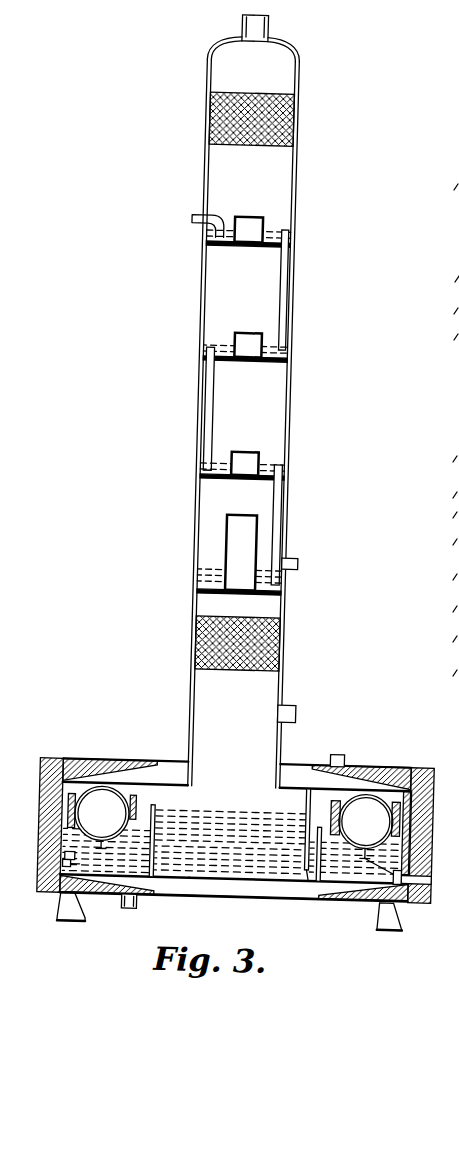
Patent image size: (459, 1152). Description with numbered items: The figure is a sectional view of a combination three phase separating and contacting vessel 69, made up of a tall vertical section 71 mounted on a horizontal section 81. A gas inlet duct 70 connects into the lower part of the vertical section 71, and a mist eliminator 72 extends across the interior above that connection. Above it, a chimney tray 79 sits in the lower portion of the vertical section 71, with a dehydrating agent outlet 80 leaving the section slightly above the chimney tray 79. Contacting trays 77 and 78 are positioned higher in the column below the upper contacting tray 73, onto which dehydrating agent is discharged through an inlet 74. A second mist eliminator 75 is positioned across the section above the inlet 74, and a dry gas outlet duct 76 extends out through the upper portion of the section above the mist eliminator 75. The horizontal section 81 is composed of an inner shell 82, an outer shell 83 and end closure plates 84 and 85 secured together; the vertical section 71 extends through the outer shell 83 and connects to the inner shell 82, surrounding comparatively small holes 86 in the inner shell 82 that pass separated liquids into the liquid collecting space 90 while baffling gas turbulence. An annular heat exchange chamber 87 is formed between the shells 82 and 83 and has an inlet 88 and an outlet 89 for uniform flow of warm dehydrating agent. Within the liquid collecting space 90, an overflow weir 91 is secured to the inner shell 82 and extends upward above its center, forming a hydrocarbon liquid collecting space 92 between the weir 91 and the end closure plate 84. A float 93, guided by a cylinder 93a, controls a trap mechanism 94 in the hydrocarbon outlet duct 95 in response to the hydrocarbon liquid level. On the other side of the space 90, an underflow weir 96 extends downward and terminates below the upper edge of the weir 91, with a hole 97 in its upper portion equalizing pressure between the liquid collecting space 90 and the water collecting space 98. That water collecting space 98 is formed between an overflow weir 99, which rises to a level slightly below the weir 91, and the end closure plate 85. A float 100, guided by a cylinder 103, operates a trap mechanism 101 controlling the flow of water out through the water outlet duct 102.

The combination three phase separating and contacting vessel 69 is at (178, 415).
The gas inlet duct 70 is at (298, 704).
The vertical section 71 is at (195, 313).
The mist eliminator 72 is at (289, 639).
The upper contacting tray 73 is at (204, 248).
The inlet 74 is at (190, 216).
The mist eliminator 75 is at (288, 117).
The dry gas outlet duct 76 is at (231, 22).
The contacting tray 77 is at (280, 362).
The contacting tray 78 is at (208, 483).
The chimney tray 79 is at (203, 598).
The dehydrating agent outlet 80 is at (296, 574).
The horizontal section 81 is at (143, 768).
The inner shell 82 is at (246, 890).
The outer shell 83 is at (168, 772).
The end closure plate 84 is at (58, 763).
The end closure plate 85 is at (433, 763).
The holes 86 is at (268, 784).
The annular heat exchange chamber 87 is at (301, 897).
The inlet 88 is at (144, 908).
The outlet 89 is at (348, 757).
The liquid collecting space 90 is at (233, 835).
The overflow weir 91 is at (183, 859).
The hydrocarbon liquid collecting space 92 is at (138, 840).
The float 93 is at (102, 817).
The cylinder 93a is at (71, 797).
The trap mechanism 94 is at (76, 860).
The hydrocarbon outlet duct 95 is at (78, 869).
The underflow weir 96 is at (329, 836).
The hole 97 is at (315, 793).
The water collecting space 98 is at (364, 861).
The overflow weir 99 is at (326, 868).
The float 100 is at (365, 822).
The trap mechanism 101 is at (425, 855).
The water outlet duct 102 is at (450, 874).
The cylinder 103 is at (442, 797).